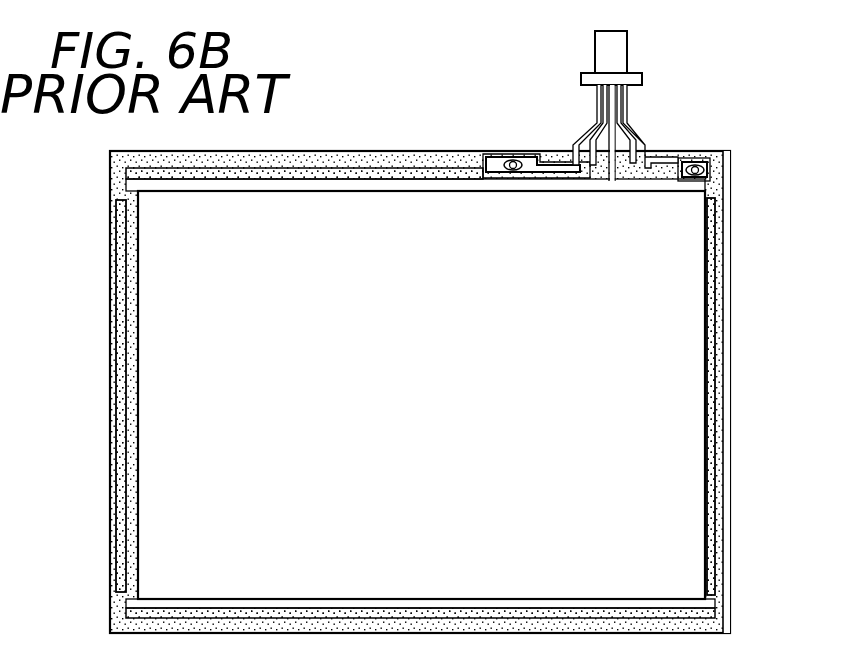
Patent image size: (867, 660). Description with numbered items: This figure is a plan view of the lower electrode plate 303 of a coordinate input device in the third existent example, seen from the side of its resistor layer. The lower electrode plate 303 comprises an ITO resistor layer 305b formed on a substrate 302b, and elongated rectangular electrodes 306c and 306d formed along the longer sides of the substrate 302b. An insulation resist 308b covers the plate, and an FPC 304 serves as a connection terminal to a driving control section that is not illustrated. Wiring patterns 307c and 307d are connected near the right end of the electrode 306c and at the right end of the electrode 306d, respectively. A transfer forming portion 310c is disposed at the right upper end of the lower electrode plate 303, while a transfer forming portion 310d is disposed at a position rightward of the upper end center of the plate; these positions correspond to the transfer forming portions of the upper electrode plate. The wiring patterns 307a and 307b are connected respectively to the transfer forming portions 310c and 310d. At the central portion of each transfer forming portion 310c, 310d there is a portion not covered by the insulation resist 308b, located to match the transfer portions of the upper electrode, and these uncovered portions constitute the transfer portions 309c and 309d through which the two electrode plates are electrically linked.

The substrate 302b is at (733, 292).
The lower electrode plate 303 is at (471, 117).
The FPC 304 is at (619, 57).
The ITO resistor layer 305b is at (668, 380).
The electrode 306c is at (378, 188).
The electrode 306d is at (696, 614).
The wiring pattern 307a is at (622, 152).
The wiring pattern 307b is at (574, 154).
The wiring pattern 307c is at (594, 158).
The wiring pattern 307d is at (718, 215).
The insulation resist 308b is at (318, 162).
The transfer portion 309c is at (698, 163).
The transfer portion 309d is at (514, 172).
The transfer forming portion 310c is at (710, 168).
The transfer forming portion 310d is at (490, 164).